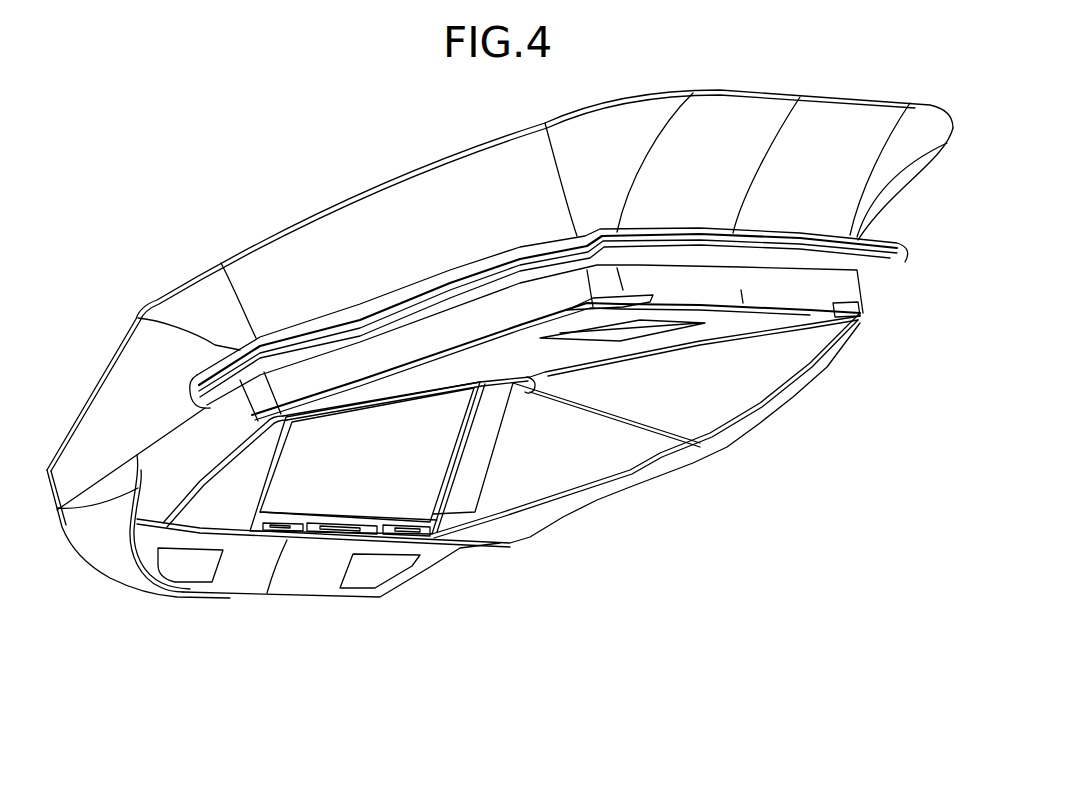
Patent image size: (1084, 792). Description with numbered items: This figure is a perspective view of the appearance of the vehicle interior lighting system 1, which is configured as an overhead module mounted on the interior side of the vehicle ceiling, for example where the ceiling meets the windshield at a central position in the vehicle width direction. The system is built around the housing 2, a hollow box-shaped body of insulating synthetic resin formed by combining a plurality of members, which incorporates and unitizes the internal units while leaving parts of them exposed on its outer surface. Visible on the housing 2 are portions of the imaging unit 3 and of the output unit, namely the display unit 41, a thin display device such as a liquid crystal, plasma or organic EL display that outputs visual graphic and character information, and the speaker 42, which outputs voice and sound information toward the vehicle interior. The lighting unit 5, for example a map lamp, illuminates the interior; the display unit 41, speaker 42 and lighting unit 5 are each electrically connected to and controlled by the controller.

The vehicle interior lighting system 1 is at (296, 191).
The housing 2 is at (689, 460).
The imaging unit 3 is at (187, 565).
The display unit 41 is at (423, 464).
The speaker 42 is at (230, 509).
The lighting unit 5 is at (877, 264).